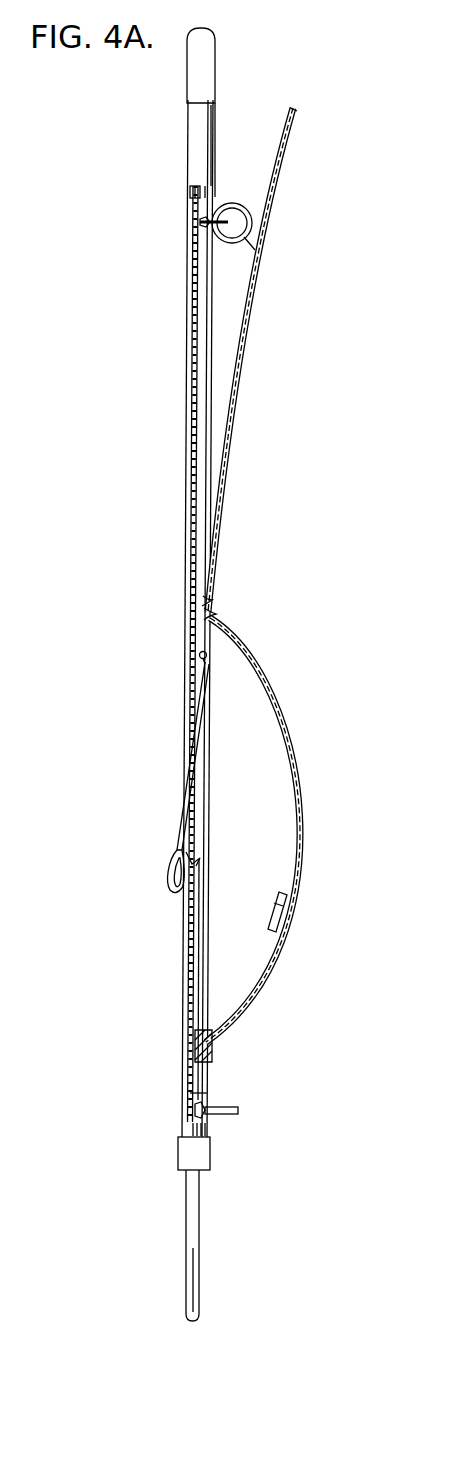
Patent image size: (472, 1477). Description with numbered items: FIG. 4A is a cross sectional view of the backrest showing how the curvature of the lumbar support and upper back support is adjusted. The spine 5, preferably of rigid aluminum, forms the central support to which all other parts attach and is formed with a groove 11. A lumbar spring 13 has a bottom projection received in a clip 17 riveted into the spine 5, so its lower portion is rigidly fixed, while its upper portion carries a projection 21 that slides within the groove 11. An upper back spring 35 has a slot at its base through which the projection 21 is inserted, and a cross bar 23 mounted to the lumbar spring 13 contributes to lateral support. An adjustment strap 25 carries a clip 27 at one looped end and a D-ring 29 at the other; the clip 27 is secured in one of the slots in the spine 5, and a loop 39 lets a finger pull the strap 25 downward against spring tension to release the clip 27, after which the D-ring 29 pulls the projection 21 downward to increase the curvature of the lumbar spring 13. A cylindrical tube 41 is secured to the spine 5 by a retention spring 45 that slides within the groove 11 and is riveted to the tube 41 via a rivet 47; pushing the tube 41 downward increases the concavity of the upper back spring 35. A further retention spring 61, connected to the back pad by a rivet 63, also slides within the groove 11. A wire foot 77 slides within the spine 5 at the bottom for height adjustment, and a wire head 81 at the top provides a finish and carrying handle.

The spine 5 is at (184, 566).
The groove 11 is at (194, 333).
The lumbar spring 13 is at (287, 738).
The clip 17 is at (209, 1060).
The projection 21 is at (212, 598).
The cross bar 23 is at (278, 914).
The adjustment strap 25 is at (184, 778).
The clip 27 is at (200, 862).
The D-ring 29 is at (217, 612).
The upper back spring 35 is at (246, 320).
The loop 39 is at (174, 892).
The cylindrical tube 41 is at (240, 204).
The retention spring 45 is at (199, 204).
The rivet 47 is at (247, 250).
The retention spring 61 is at (211, 1130).
The rivet 63 is at (239, 1112).
The wire foot 77 is at (200, 1277).
The wire head 81 is at (215, 54).